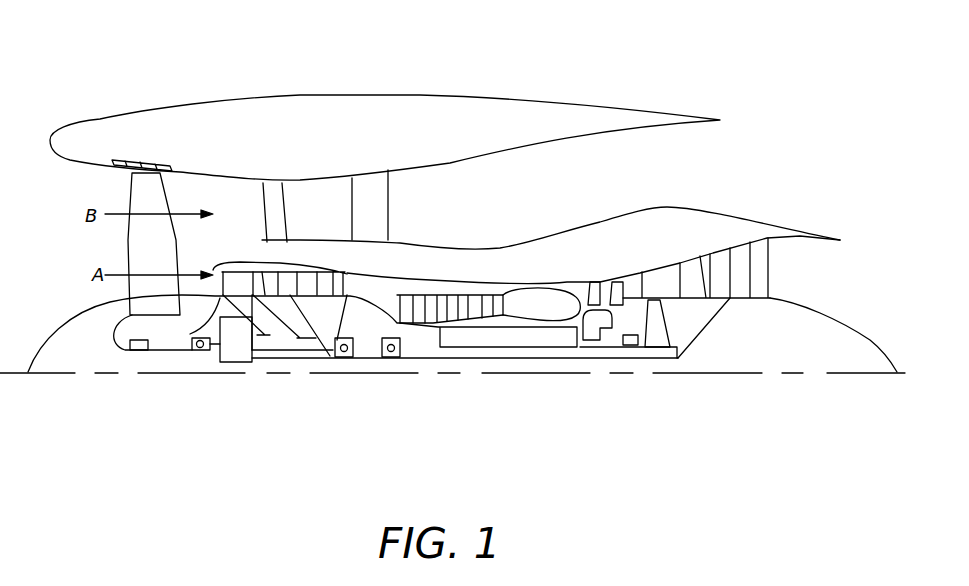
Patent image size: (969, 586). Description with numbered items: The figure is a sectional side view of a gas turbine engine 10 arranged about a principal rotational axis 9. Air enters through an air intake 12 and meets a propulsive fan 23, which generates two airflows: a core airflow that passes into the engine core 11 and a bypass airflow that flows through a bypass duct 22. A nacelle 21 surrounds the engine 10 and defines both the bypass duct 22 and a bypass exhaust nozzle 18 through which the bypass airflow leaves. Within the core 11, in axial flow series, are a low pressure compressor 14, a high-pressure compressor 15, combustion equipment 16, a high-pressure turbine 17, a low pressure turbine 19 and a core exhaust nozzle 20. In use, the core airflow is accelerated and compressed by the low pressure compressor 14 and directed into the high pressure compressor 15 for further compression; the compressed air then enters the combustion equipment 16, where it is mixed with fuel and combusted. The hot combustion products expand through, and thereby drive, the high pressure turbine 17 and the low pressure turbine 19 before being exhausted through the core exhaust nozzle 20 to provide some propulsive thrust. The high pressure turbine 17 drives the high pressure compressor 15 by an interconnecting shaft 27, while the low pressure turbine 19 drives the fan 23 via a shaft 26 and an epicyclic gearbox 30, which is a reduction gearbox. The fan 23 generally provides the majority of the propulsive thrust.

The principal rotational axis 9 is at (778, 372).
The gas turbine engine 10 is at (385, 101).
The core 11 is at (503, 270).
The air intake 12 is at (63, 179).
The low pressure compressor 14 is at (310, 272).
The high-pressure compressor 15 is at (457, 305).
The combustion equipment 16 is at (533, 307).
The high-pressure turbine 17 is at (597, 288).
The bypass exhaust nozzle 18 is at (722, 157).
The low pressure turbine 19 is at (740, 258).
The core exhaust nozzle 20 is at (817, 272).
The nacelle 21 is at (367, 108).
The bypass duct 22 is at (665, 181).
The propulsive fan 23 is at (135, 237).
The shaft 26 is at (450, 360).
The interconnecting shaft 27 is at (493, 347).
The epicyclic gearbox 30 is at (233, 350).